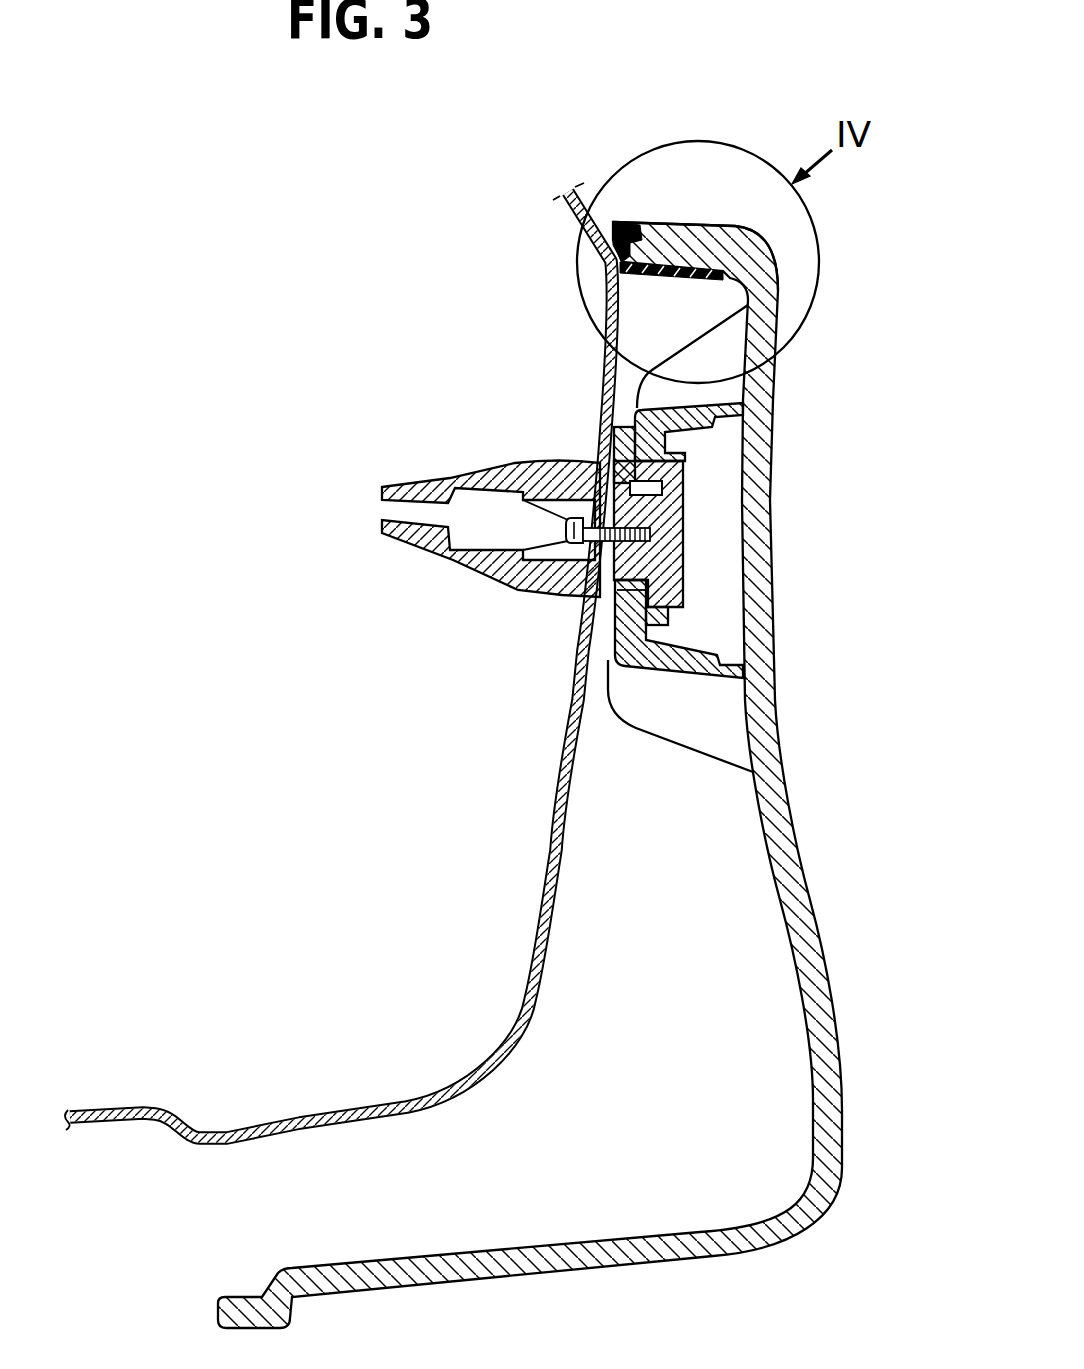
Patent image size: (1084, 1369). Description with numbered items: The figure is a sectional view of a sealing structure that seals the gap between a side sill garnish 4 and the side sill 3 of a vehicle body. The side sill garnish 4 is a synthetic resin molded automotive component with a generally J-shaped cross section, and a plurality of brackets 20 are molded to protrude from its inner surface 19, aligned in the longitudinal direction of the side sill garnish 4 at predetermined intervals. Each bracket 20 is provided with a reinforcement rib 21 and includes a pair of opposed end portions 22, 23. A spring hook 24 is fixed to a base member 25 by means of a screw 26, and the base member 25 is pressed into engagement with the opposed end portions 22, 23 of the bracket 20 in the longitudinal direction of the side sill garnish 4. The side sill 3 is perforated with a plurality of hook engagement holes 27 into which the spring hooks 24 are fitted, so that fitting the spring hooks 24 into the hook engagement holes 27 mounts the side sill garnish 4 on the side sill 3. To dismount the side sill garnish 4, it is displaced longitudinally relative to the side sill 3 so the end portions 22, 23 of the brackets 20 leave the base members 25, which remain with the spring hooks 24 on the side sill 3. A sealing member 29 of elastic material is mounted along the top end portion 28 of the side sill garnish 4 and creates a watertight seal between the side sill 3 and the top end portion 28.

The side sill 3 is at (555, 930).
The side sill garnish 4 is at (790, 842).
The inner surface 19 is at (777, 883).
The bracket 20 is at (614, 706).
The reinforcement rib 21 is at (727, 340).
The end portion 22 is at (660, 465).
The end portion 23 is at (637, 607).
The spring hook 24 is at (516, 465).
The base member 25 is at (663, 517).
The screw 26 is at (623, 543).
The hook engagement hole 27 is at (604, 462).
The top end portion 28 is at (713, 242).
The sealing member 29 is at (676, 262).